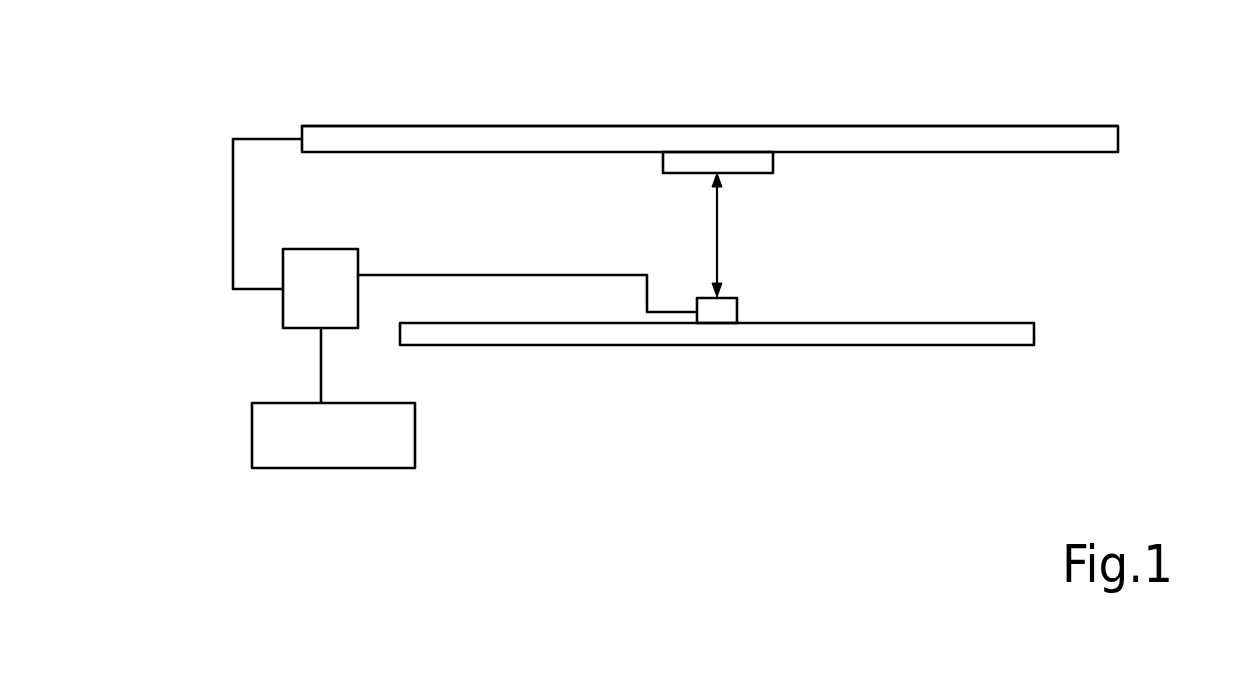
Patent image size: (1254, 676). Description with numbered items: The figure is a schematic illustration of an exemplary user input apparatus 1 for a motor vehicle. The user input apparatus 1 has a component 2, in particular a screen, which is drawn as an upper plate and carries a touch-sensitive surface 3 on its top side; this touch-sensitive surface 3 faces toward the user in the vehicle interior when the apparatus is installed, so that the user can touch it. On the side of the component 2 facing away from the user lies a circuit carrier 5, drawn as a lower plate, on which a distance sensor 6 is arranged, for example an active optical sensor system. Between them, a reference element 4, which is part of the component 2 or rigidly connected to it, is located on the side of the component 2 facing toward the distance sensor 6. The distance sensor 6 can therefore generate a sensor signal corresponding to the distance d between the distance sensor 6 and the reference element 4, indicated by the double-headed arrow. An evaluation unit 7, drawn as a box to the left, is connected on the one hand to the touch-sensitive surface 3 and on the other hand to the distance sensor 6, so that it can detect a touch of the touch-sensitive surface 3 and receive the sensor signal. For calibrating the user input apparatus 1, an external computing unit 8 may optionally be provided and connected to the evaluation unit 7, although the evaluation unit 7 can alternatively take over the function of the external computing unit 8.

The user input apparatus 1 is at (1068, 375).
The component 2 is at (1053, 138).
The touch-sensitive surface 3 is at (726, 125).
The reference element 4 is at (757, 164).
The circuit carrier 5 is at (992, 334).
The distance sensor 6 is at (727, 310).
The evaluation unit 7 is at (327, 270).
The external computing unit 8 is at (393, 442).
The distance d is at (720, 237).